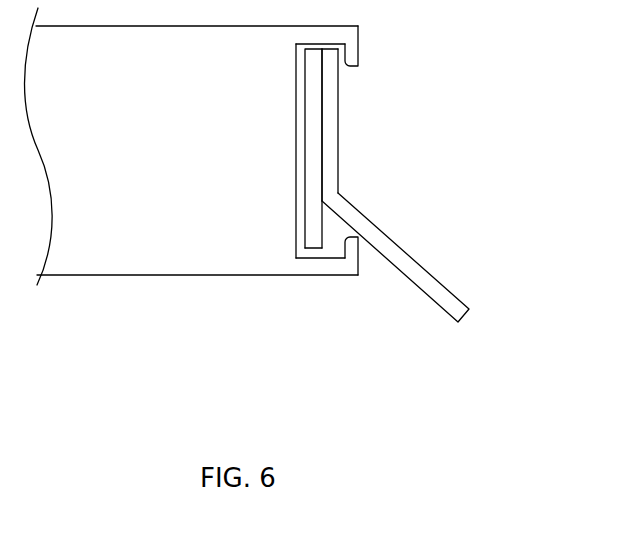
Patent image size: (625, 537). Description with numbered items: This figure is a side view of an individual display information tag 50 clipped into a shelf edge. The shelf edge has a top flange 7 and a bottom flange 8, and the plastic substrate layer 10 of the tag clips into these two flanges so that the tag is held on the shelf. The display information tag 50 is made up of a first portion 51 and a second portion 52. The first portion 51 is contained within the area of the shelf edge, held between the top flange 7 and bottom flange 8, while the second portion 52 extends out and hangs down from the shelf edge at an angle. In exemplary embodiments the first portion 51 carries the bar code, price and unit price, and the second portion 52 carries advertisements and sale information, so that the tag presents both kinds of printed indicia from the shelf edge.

The top flange 7 is at (358, 52).
The bottom flange 8 is at (358, 262).
The plastic substrate layer 10 is at (313, 78).
The display information tag 50 is at (432, 185).
The first portion 51 is at (330, 115).
The second portion 52 is at (456, 281).